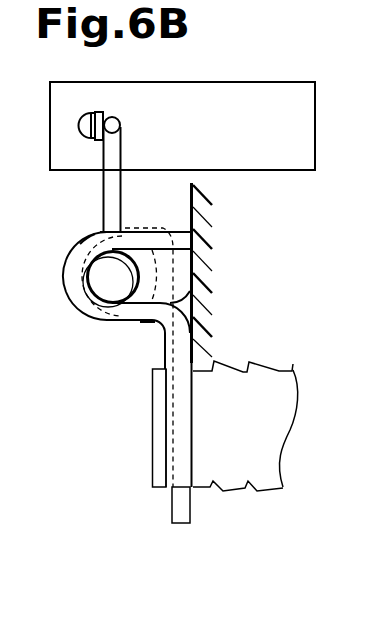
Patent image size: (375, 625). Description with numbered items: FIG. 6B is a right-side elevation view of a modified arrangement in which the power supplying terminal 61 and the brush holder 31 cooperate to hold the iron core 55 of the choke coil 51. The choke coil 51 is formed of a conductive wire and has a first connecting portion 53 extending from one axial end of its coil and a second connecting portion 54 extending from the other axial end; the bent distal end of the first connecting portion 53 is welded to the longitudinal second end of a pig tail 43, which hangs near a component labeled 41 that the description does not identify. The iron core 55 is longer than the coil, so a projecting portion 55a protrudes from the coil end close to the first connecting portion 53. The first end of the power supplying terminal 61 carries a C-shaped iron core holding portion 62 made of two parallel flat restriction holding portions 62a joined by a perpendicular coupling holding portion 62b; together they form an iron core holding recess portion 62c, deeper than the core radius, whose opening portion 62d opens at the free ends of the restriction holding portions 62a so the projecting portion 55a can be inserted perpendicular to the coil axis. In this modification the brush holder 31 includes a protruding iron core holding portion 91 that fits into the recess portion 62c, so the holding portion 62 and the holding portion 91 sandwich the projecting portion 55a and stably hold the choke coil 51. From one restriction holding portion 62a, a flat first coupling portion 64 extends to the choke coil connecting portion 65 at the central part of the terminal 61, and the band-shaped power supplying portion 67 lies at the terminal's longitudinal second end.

The brush holder 31 is at (198, 177).
The housing 41 is at (288, 172).
The pig tail 43 is at (95, 112).
The choke coil 51 is at (193, 242).
The first connecting portion 53 is at (122, 143).
The second connecting portion 54 is at (173, 506).
The iron core 55 is at (100, 323).
The projecting portion 55a is at (102, 285).
The power supplying terminal 61 is at (268, 370).
The iron core holding portion 62 is at (72, 250).
The restriction holding portions 62a is at (103, 231).
The coupling holding portion 62b is at (75, 278).
The iron core holding recess portion 62c is at (96, 241).
The opening portion 62d is at (185, 301).
The first coupling portion 64 is at (188, 414).
The choke coil connecting portion 65 is at (153, 448).
The power supplying portion 67 is at (228, 489).
The iron core holding portion 91 is at (147, 260).